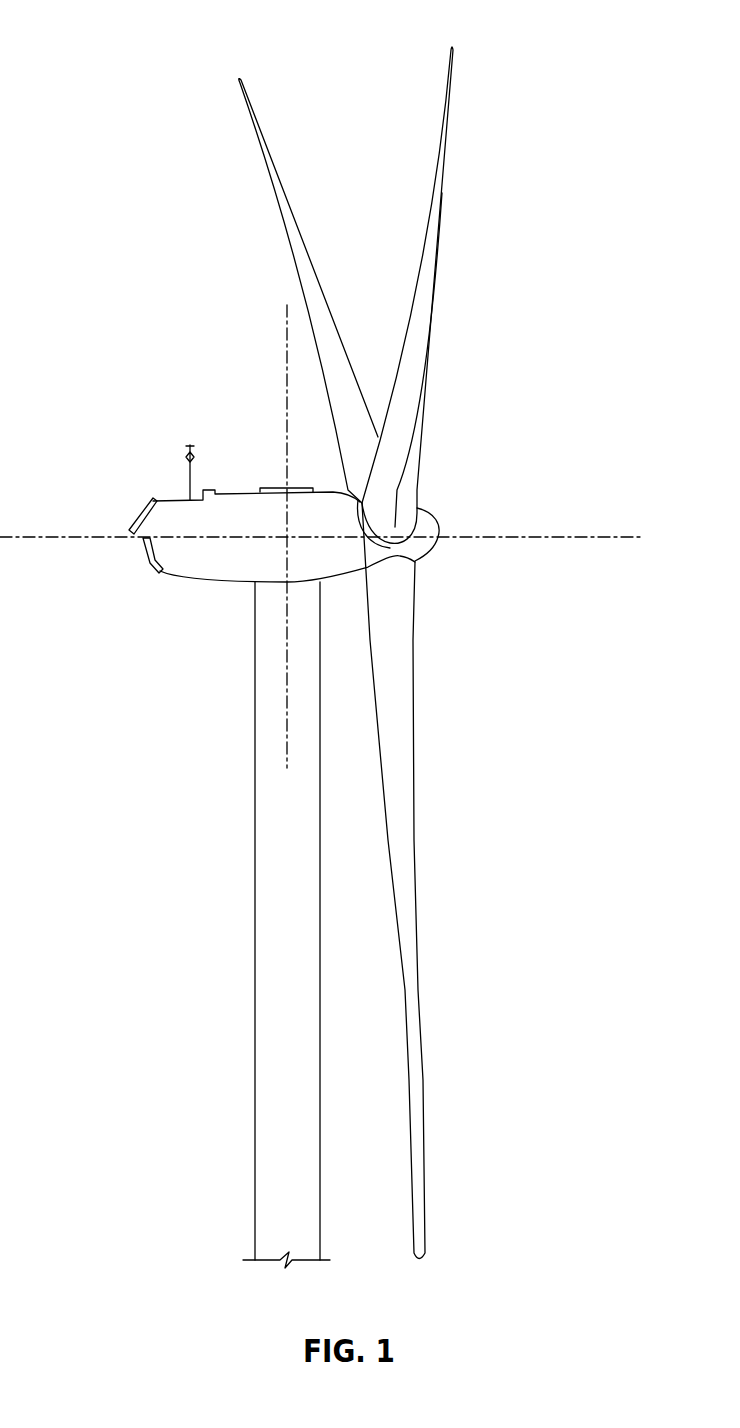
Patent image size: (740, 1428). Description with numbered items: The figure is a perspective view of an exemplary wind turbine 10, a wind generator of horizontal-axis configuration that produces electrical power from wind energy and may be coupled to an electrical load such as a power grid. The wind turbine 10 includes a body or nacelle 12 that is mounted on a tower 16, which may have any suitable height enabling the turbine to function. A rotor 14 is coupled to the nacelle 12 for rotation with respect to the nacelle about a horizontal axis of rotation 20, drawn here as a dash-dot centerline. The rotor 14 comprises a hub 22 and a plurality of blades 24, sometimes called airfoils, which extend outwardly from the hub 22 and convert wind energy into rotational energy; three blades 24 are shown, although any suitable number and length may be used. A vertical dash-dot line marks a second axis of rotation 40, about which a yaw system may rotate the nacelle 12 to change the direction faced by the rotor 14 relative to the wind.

The wind turbine 10 is at (138, 103).
The nacelle 12 is at (202, 577).
The rotor 14 is at (433, 594).
The tower 16 is at (253, 880).
The axis of rotation 20 is at (582, 538).
The hub 22 is at (438, 540).
The blade 24 is at (283, 184).
The axis of rotation 40 is at (287, 367).